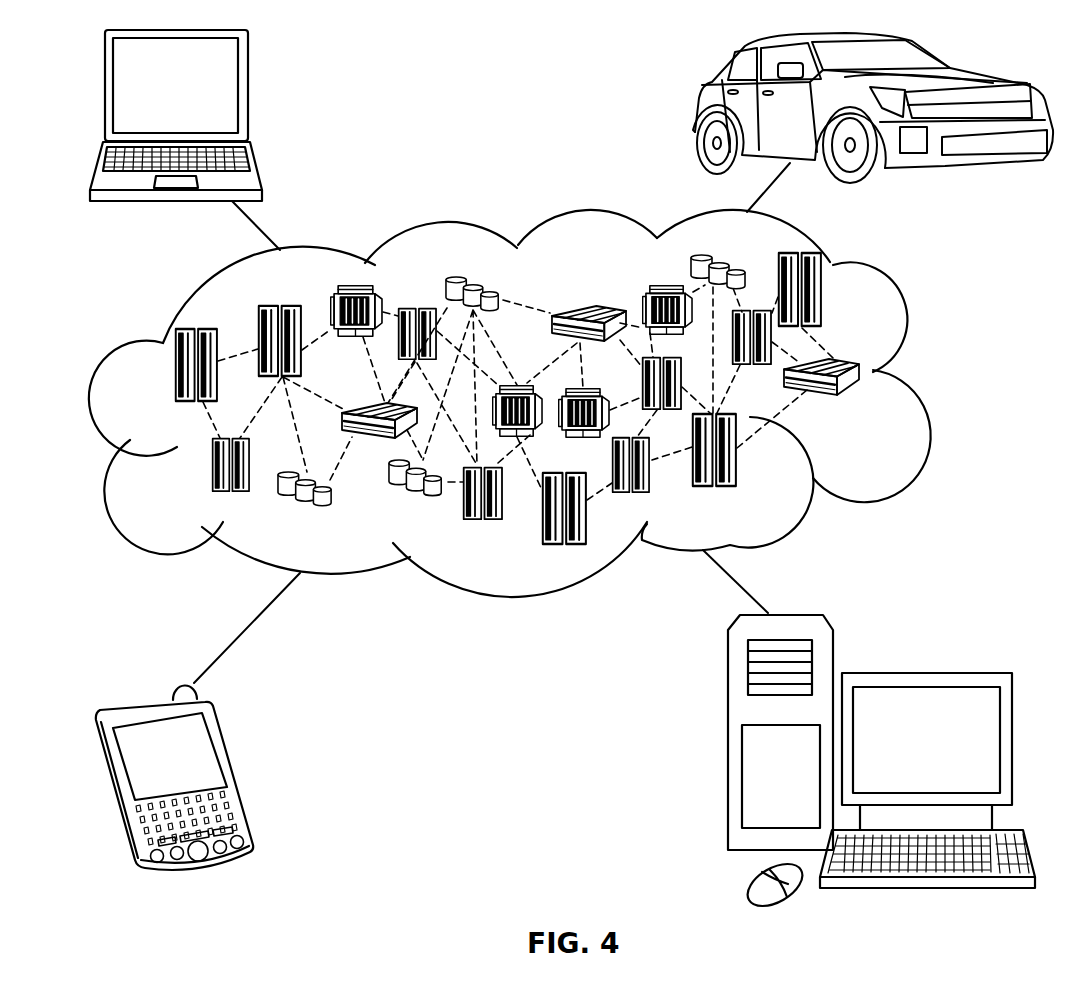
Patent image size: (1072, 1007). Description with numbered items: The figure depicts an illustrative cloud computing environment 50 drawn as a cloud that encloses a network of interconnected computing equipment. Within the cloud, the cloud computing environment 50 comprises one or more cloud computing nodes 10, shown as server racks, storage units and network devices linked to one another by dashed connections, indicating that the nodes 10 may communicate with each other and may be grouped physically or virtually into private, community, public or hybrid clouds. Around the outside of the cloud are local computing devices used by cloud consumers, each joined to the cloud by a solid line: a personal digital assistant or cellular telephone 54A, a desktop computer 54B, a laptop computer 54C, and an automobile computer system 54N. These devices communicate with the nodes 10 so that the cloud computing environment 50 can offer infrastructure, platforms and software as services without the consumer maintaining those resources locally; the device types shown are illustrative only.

The cloud computing node 10 is at (880, 416).
The cloud computing environment 50 is at (922, 377).
The personal digital assistant (PDA) or cellular telephone 54A is at (238, 770).
The desktop computer 54B is at (920, 673).
The laptop computer 54C is at (248, 92).
The automobile computer system 54N is at (700, 113).